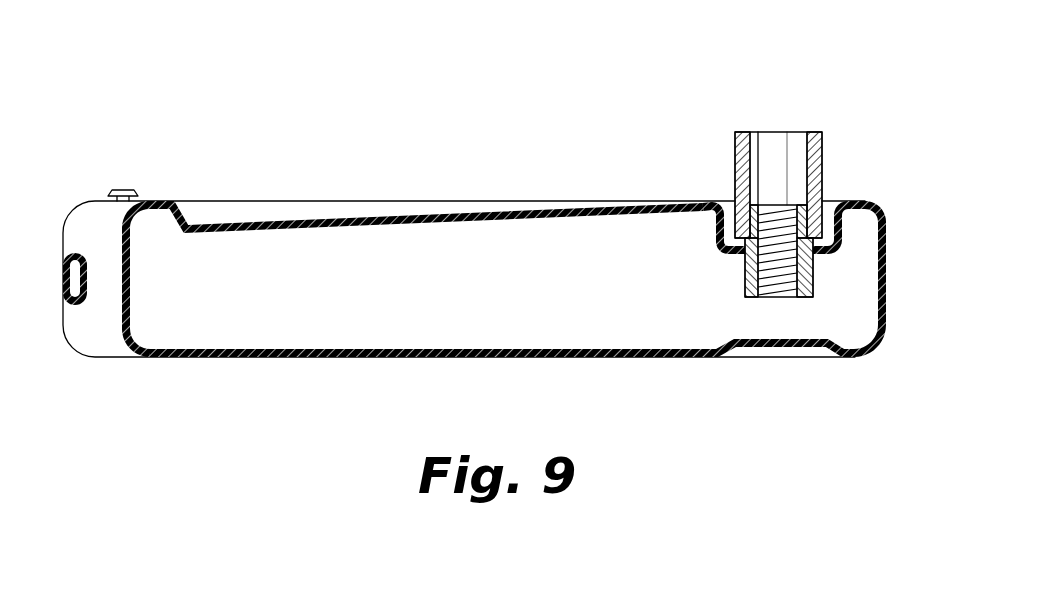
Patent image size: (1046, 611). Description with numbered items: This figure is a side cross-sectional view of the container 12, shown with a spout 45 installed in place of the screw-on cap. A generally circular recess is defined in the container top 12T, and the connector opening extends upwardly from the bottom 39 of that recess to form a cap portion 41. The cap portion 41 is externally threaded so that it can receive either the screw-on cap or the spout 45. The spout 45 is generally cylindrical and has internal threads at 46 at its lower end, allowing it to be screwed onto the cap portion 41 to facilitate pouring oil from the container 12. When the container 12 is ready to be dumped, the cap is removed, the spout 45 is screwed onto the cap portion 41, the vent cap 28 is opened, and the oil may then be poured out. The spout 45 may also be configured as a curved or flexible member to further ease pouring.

The container 12 is at (560, 120).
The container top 12T is at (708, 204).
The vent cap 28 is at (123, 188).
The bottom of recess 39 is at (732, 250).
The cap portion 41 is at (822, 200).
The spout 45 is at (822, 152).
The internal threads 46 is at (833, 258).